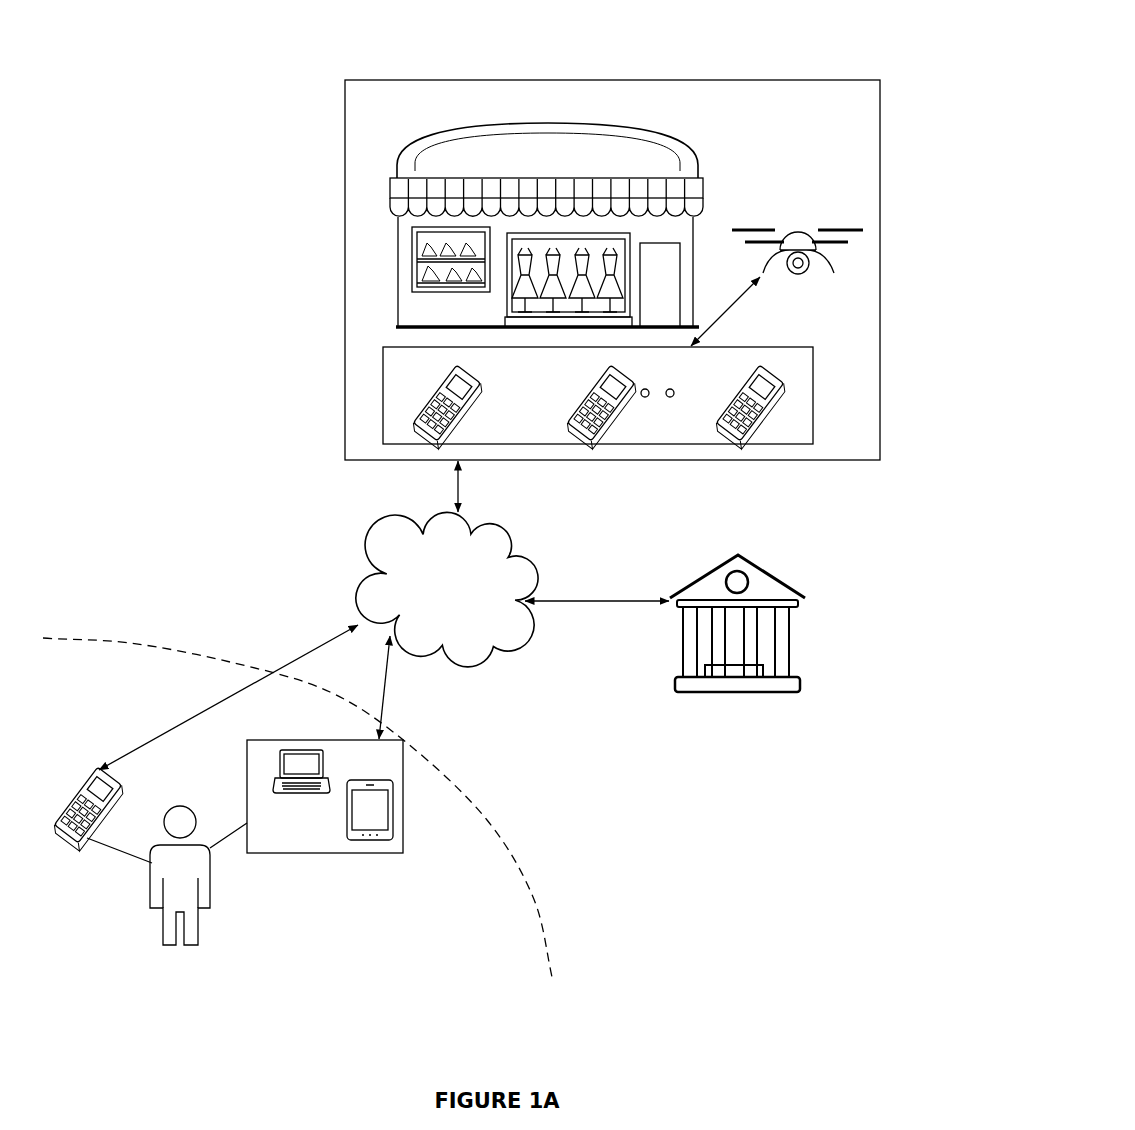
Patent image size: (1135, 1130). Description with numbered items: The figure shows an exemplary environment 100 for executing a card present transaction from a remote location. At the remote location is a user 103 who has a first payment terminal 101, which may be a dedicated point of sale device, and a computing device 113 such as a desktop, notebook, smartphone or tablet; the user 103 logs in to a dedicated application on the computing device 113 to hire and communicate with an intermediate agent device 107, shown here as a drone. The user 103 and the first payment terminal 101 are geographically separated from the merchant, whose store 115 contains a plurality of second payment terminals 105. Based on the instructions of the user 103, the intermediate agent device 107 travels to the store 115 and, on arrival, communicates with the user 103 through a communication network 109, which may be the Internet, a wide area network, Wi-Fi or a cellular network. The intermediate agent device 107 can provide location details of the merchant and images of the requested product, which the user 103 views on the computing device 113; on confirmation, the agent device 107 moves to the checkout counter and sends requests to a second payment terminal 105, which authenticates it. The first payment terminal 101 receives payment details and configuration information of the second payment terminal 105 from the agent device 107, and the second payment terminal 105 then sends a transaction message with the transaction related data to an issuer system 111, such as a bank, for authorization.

The environment 100 is at (902, 60).
The first payment terminal 101 is at (89, 814).
The user 103 is at (187, 804).
The second payment terminal 105 is at (731, 389).
The intermediate agent device 107 is at (832, 226).
The communication network 109 is at (429, 523).
The issuer system 111 is at (742, 553).
The computing device 113 is at (325, 739).
The store 115 is at (621, 122).